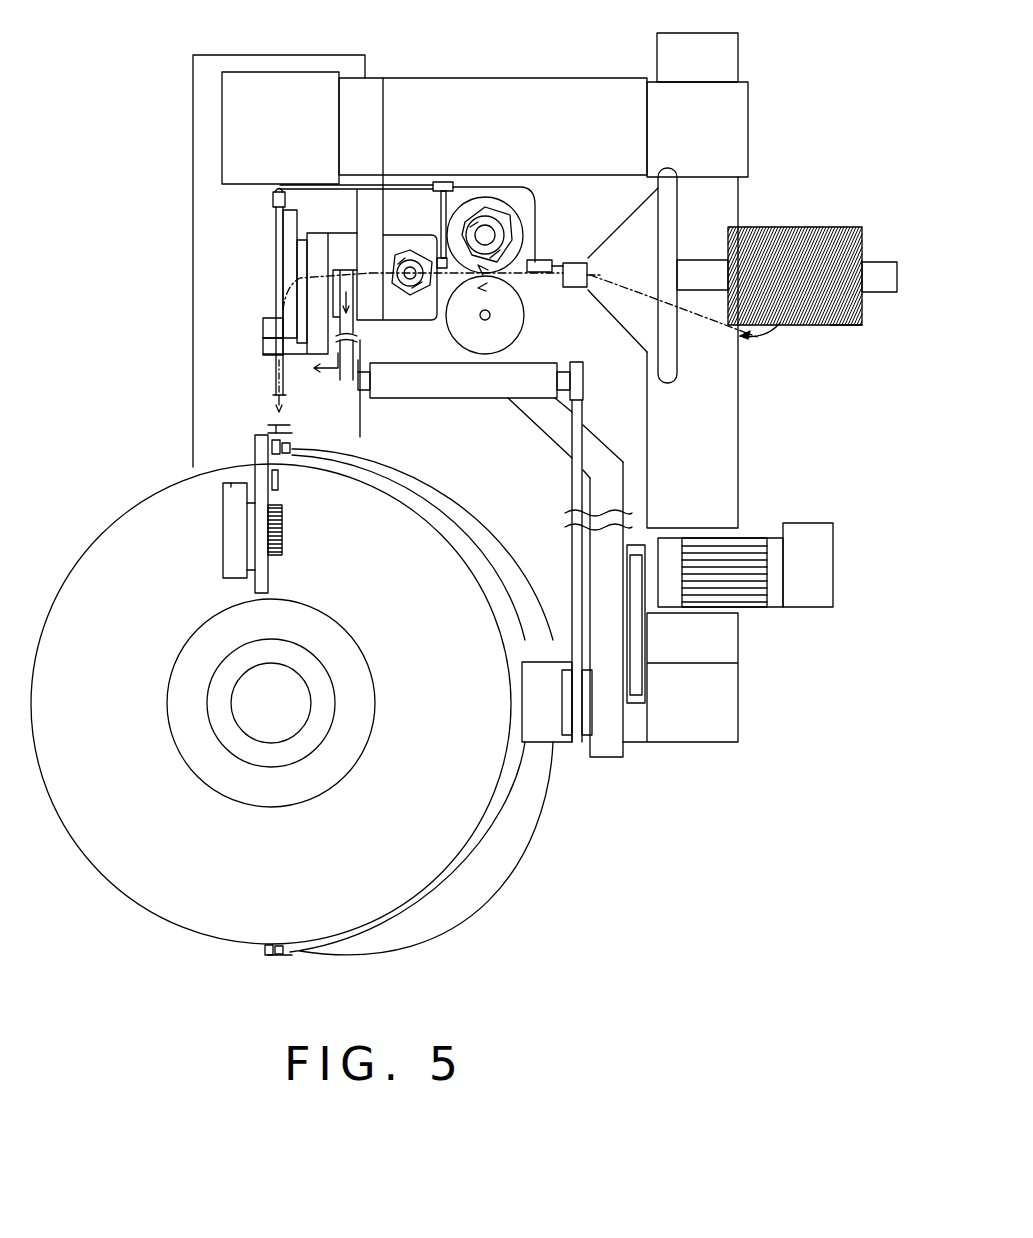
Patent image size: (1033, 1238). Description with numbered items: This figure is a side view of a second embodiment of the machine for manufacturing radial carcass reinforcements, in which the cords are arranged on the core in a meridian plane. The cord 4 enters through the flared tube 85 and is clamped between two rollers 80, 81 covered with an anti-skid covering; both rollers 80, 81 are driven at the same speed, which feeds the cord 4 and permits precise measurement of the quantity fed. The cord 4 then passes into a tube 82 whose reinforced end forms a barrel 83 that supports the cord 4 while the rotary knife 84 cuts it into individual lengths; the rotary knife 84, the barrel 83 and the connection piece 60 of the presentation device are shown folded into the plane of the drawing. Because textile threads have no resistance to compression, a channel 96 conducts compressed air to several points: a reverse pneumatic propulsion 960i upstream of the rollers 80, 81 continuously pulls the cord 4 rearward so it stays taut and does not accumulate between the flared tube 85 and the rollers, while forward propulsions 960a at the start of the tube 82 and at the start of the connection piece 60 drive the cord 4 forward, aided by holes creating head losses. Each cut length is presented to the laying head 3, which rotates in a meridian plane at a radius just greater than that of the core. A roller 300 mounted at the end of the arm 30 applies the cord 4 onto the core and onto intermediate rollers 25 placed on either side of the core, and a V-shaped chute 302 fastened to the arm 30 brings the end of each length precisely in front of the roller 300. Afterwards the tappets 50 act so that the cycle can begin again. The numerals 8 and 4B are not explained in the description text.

The laying head 3 is at (277, 427).
The cord 4 is at (720, 337).
The motor 4B is at (827, 325).
The motor 8 is at (800, 205).
The intermediate rollers 25 is at (270, 545).
The arm 30 is at (490, 480).
The tappets 50 is at (258, 470).
The connection piece 60 is at (262, 382).
The roller 80 is at (517, 323).
The roller 81 is at (517, 225).
The tube 82 is at (282, 296).
The barrel 83 is at (263, 327).
The rotary knife 84 is at (272, 338).
The flared tube 85 is at (628, 245).
The channel 96 is at (277, 223).
The roller 300 is at (276, 440).
The chute 302 is at (283, 443).
The forward propulsion 960a is at (437, 312).
The reverse pneumatic propulsion 960i is at (540, 282).